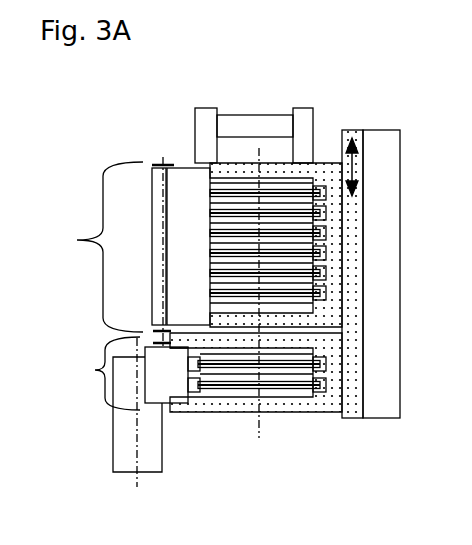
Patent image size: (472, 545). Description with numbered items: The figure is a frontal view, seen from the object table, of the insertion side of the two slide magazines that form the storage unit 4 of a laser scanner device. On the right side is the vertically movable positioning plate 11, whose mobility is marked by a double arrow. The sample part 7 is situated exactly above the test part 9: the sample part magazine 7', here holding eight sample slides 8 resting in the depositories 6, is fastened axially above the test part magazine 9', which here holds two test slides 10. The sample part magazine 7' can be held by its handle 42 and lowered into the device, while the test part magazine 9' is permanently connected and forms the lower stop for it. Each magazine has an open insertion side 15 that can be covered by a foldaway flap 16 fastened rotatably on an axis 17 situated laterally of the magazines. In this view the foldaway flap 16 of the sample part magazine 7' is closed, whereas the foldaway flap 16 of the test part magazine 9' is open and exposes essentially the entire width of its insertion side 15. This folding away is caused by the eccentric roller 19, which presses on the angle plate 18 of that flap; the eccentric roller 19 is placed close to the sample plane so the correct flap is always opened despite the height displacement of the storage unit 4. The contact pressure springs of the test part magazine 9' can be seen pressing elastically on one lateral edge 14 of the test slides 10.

The storage unit 4 is at (103, 150).
The depository 6 is at (327, 190).
The sample part 7 is at (175, 247).
The sample part magazine 7' is at (337, 255).
The sample slide 8 is at (297, 192).
The test part 9 is at (175, 373).
The test part magazine 9' is at (317, 379).
The test slide 10 is at (237, 367).
The positioning plate 11 is at (352, 220).
The longitudinal edge 14 is at (200, 392).
The insertion side 15 is at (285, 427).
The foldaway flap 16 is at (201, 250).
The axis 17 is at (163, 313).
The angle plate 18 is at (155, 233).
The eccentric roller 19 is at (141, 452).
The handle 42 is at (237, 122).